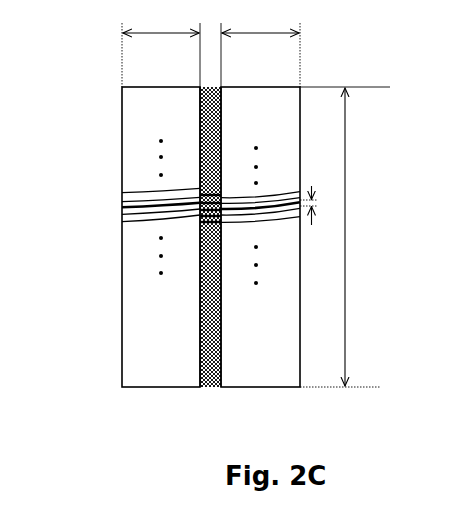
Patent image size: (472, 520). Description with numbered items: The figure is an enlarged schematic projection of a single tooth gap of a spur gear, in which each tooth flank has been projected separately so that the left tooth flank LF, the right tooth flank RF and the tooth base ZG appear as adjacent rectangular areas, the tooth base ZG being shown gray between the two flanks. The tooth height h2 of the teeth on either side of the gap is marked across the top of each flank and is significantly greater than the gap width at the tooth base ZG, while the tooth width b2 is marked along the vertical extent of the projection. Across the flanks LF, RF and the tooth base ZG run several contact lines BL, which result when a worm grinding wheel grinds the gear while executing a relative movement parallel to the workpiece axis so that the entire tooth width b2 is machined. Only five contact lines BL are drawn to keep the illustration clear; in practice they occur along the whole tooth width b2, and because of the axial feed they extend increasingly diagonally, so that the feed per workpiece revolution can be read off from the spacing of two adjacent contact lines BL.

The left tooth flank LF is at (161, 224).
The right tooth flank RF is at (260, 224).
The tooth base ZG is at (207, 253).
The contact lines BL is at (121, 207).
The tooth height h2 is at (211, 47).
The tooth width b2 is at (345, 237).